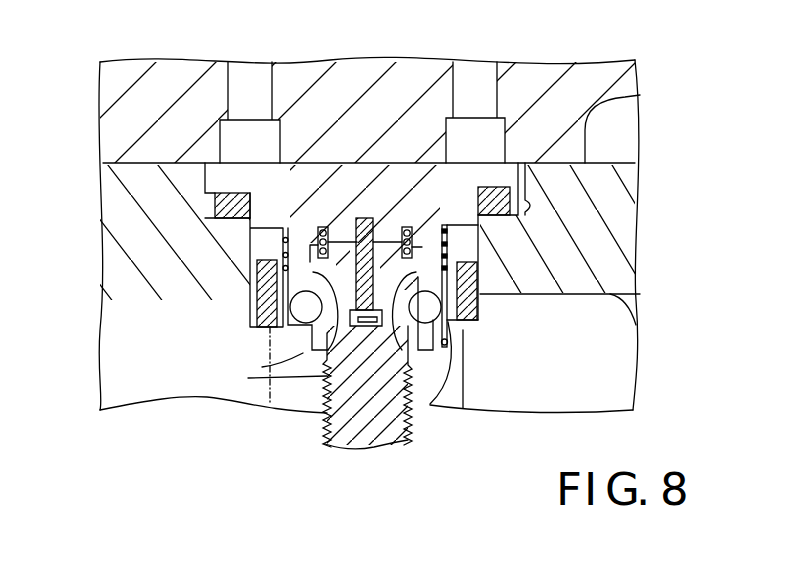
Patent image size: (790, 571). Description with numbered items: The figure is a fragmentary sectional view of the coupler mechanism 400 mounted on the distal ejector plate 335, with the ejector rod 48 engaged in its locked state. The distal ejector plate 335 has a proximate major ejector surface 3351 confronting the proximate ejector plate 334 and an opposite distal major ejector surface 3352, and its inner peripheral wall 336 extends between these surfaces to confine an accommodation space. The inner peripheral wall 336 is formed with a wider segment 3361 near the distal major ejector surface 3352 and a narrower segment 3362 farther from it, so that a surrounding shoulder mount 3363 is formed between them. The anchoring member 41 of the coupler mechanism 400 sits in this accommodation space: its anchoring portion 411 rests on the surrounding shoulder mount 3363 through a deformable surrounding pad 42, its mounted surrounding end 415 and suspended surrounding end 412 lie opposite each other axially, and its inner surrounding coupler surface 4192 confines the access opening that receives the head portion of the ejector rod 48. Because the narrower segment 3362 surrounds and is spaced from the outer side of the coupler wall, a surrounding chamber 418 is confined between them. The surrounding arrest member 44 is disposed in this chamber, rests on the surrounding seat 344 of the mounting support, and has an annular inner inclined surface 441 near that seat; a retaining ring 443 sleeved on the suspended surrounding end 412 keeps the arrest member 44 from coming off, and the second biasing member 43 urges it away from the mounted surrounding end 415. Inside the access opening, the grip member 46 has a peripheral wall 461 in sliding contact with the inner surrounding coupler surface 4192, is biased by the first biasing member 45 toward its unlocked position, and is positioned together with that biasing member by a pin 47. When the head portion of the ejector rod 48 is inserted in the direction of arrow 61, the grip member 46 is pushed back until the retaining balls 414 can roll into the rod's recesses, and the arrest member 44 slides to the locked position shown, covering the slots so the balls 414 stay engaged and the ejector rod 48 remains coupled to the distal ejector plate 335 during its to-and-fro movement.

The coupler mechanism 400 is at (203, 427).
The anchoring member 41 is at (466, 158).
The anchoring portion 411 is at (195, 163).
The suspended surrounding end 412 is at (543, 294).
The retaining balls 414 is at (303, 310).
The mounted surrounding end 415 is at (203, 182).
The surrounding chamber 418 is at (255, 245).
The inner surrounding coupler surface 4192 is at (270, 378).
The surrounding pad 42 is at (215, 214).
The second biasing member 43 is at (258, 266).
The surrounding arrest member 44 is at (263, 325).
The annular inner inclined surface 441 is at (450, 323).
The retaining ring 443 is at (455, 395).
The first biasing member 45 is at (422, 300).
The grip member 46 is at (486, 251).
The peripheral wall 461 is at (450, 229).
The pin 47 is at (365, 218).
The ejector rod 48 is at (320, 428).
The arrow 61 is at (374, 456).
The proximate ejector plate 334 is at (620, 85).
The proximate major ejector surface 3351 is at (588, 133).
The distal ejector plate 335 is at (605, 165).
The wider segment 3361 is at (520, 178).
The inner peripheral wall 336 is at (520, 228).
The surrounding shoulder mount 3363 is at (520, 208).
The narrower segment 3362 is at (500, 272).
The distal major ejector surface 3352 is at (640, 324).
The surrounding seat 344 is at (467, 323).